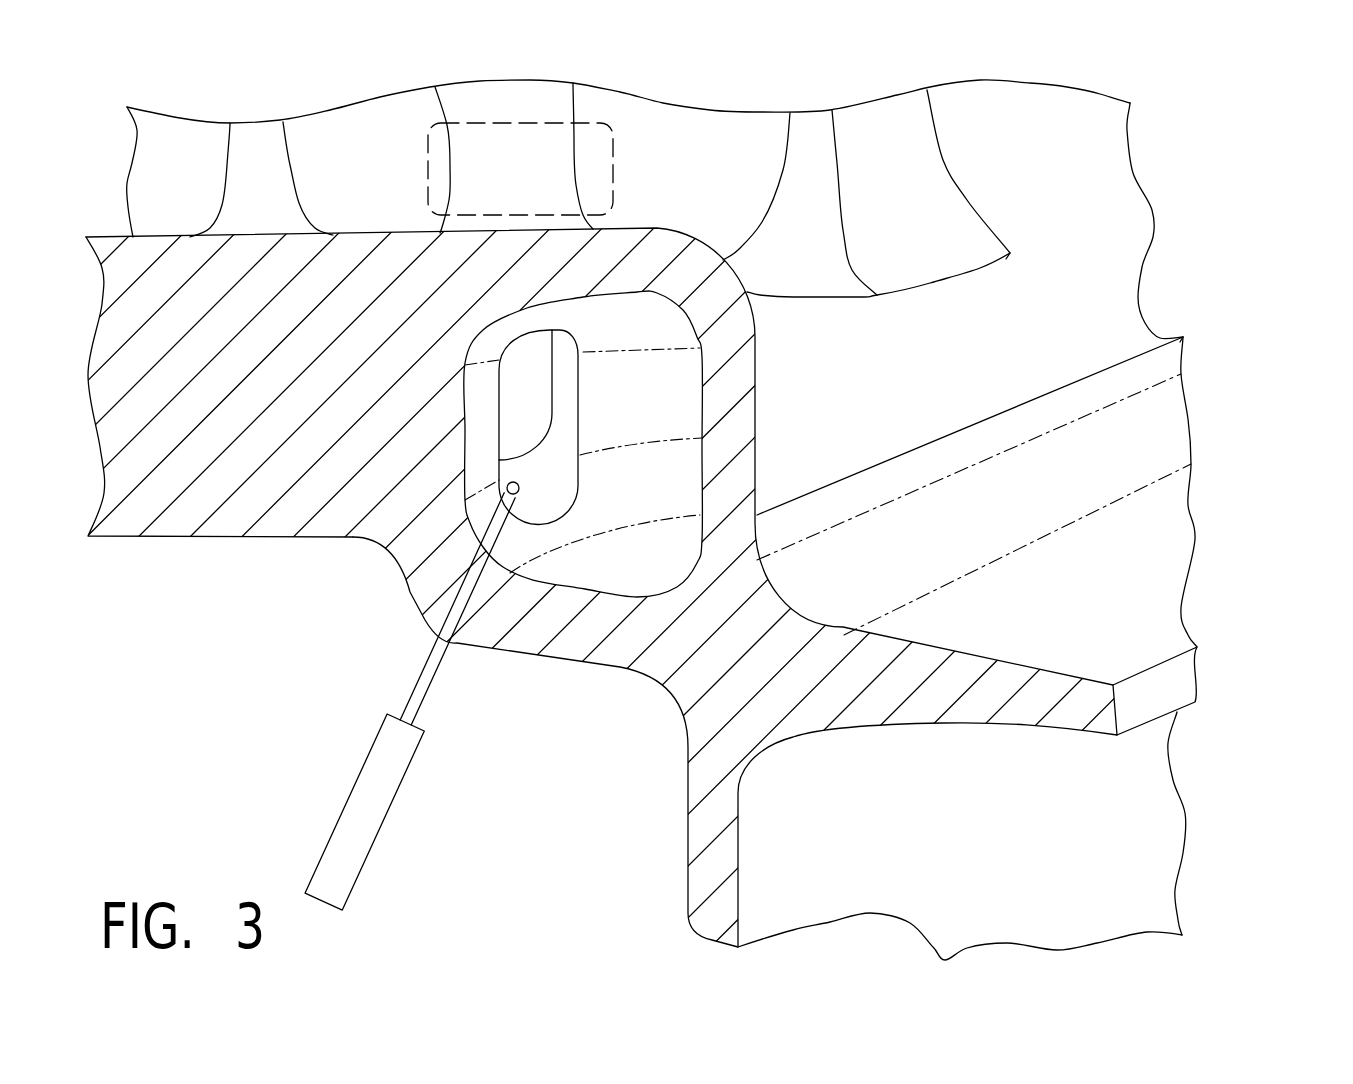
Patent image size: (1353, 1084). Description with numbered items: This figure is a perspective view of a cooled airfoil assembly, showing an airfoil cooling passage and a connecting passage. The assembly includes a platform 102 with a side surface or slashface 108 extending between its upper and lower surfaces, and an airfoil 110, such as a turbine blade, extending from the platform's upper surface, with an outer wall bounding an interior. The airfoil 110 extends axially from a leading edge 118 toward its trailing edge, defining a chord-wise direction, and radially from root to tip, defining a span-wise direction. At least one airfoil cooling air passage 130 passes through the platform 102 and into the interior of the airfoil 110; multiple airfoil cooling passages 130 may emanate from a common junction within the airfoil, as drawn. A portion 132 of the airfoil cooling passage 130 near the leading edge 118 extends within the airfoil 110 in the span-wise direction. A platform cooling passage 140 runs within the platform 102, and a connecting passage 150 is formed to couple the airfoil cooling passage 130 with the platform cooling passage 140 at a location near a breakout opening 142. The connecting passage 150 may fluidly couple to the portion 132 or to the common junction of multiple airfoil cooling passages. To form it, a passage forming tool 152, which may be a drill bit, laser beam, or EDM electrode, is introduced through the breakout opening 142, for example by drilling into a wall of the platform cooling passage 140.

The platform 102 is at (1203, 760).
The slashface 108 is at (200, 500).
The airfoil 110 is at (1163, 150).
The leading edge 118 is at (947, 160).
The airfoil cooling air passage 130 is at (247, 152).
The portion of the airfoil cooling passage 132 is at (613, 162).
The platform cooling passage 140 is at (1082, 265).
The breakout opening 142 is at (642, 553).
The connecting passage 150 is at (551, 396).
The passage forming tool 152 is at (380, 820).